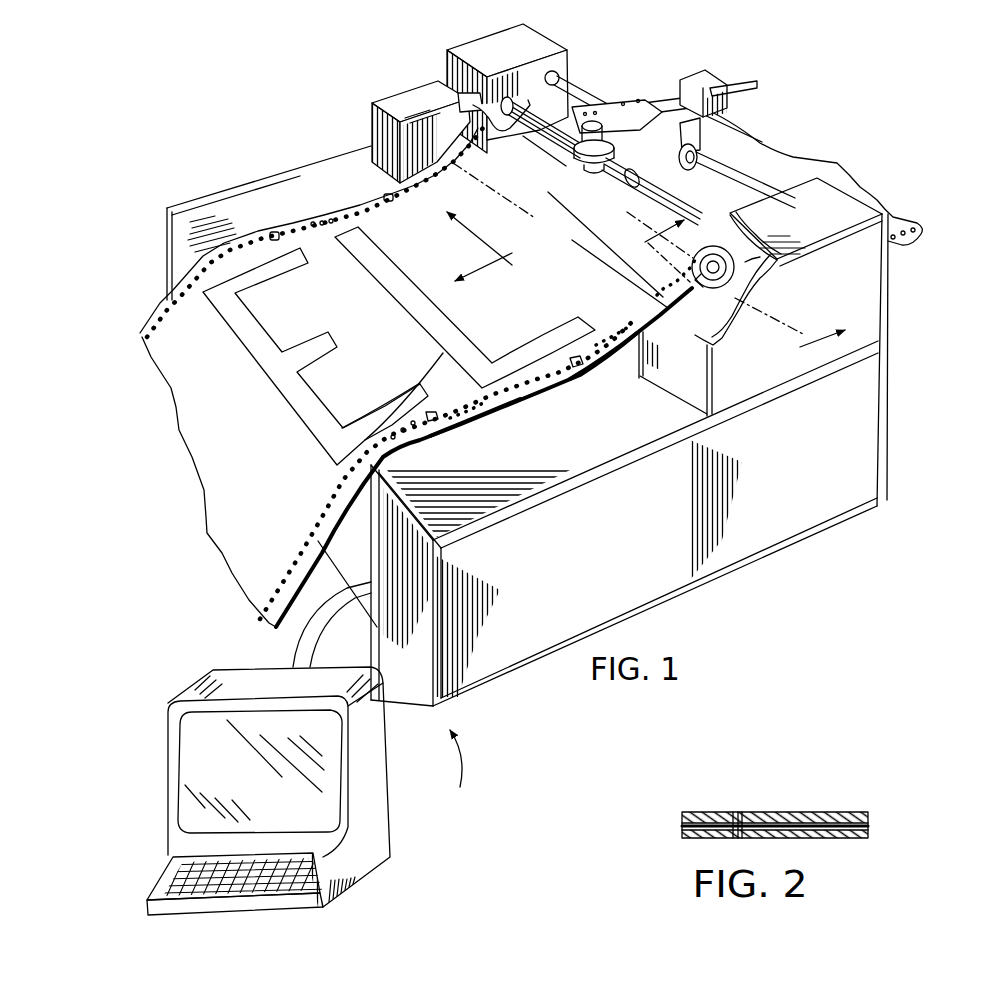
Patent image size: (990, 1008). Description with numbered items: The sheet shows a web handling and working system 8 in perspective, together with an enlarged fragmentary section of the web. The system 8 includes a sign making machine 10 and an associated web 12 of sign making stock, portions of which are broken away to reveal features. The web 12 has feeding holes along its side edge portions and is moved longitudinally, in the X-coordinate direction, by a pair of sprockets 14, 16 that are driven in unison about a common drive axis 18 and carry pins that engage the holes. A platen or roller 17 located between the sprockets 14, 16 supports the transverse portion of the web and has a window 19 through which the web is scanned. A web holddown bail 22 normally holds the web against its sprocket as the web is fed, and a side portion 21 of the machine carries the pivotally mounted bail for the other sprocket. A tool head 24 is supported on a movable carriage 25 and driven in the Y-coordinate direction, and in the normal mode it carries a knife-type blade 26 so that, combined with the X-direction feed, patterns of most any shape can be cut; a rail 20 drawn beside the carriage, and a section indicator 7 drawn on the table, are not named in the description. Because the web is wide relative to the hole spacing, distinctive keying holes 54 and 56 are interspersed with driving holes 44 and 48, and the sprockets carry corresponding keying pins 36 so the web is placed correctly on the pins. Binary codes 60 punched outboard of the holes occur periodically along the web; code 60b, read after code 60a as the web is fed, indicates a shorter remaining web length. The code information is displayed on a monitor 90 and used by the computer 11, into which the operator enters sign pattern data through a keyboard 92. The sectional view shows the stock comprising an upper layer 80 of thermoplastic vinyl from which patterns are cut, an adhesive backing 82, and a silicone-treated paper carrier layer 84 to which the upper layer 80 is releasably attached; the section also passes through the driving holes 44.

In FIG. 1, the sign making machine 10 is at (893, 308).
In FIG. 1, the computer 11 is at (370, 757).
In FIG. 1, the web 12 is at (770, 167).
In FIG. 2, the web 12 is at (840, 807).
In FIG. 1, the sprocket 14 is at (470, 135).
In FIG. 1, the sprocket 16 is at (760, 270).
In FIG. 1, the platen or roller 17 is at (708, 218).
In FIG. 1, the drive axis 18 is at (784, 318).
In FIG. 1, the window 19 is at (734, 226).
In FIG. 1, the guide rail 20 is at (558, 92).
In FIG. 1, the side portion 21 is at (726, 322).
In FIG. 1, the web holddown bail 22 is at (493, 81).
In FIG. 1, the head 24 is at (562, 152).
In FIG. 1, the carriage 25 is at (607, 180).
In FIG. 1, the knife-type cutter or blade 26 is at (596, 173).
In FIG. 1, the keying pin 36 is at (705, 286).
In FIG. 1, the driving holes 44 is at (312, 222).
In FIG. 2, the driving holes 44 is at (752, 811).
In FIG. 1, the driving holes 48 is at (413, 422).
In FIG. 1, the keying holes 54 is at (283, 228).
In FIG. 1, the keying holes 56 is at (578, 358).
In FIG. 1, the binary code 60 is at (352, 504).
In FIG. 1, the binary code a 60a is at (494, 427).
In FIG. 1, the binary code b 60b is at (607, 370).
In FIG. 1, the section line 7 is at (733, 298).
In FIG. 1, the web handling and working system 8 is at (458, 775).
In FIG. 2, the upper layer 80 is at (865, 812).
In FIG. 2, the adhesive backing or coating 82 is at (869, 825).
In FIG. 2, the carrier layer 84 is at (866, 837).
In FIG. 1, the monitor 90 is at (258, 720).
In FIG. 1, the keyboard 92 is at (313, 853).